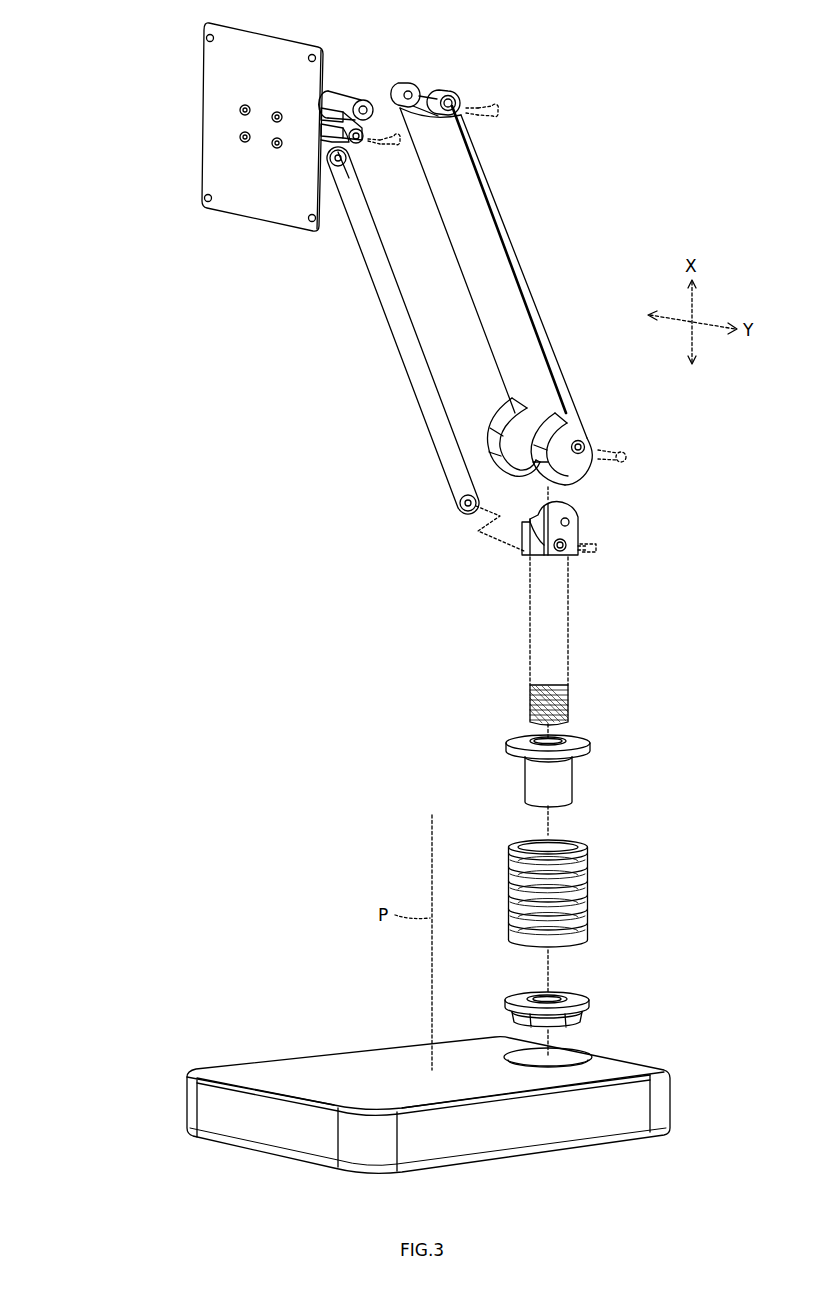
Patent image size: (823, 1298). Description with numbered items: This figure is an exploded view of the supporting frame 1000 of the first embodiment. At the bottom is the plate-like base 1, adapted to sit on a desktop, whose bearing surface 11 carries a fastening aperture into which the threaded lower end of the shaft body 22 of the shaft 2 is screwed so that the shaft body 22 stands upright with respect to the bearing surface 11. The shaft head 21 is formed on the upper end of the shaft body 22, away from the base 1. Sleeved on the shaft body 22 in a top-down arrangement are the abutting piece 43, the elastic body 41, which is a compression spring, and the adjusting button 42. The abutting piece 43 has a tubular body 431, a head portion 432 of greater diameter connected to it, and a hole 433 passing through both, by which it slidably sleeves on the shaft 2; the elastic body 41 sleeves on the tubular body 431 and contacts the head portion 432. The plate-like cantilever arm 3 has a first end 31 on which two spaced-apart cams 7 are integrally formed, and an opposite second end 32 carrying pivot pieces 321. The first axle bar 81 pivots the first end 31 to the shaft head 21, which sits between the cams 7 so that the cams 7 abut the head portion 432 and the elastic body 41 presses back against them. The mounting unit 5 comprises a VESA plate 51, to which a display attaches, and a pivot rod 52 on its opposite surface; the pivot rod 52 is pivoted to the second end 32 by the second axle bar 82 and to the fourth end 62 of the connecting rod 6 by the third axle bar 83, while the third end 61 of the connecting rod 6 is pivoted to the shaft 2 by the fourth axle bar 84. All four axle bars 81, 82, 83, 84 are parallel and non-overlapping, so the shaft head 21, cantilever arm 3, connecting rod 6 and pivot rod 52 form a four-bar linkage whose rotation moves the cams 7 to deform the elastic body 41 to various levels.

The supporting frame 1000 is at (88, 18).
The base 1 is at (318, 1072).
The bearing surface 11 is at (592, 1056).
The shaft 2 is at (655, 555).
The shaft head 21 is at (582, 548).
The shaft body 22 is at (560, 616).
The cantilever arm 3 is at (500, 195).
The first end 31 is at (589, 431).
The second end 32 is at (430, 94).
The pulley 321 is at (414, 84).
The elastic body 41 is at (590, 882).
The adjusting button 42 is at (584, 1010).
The abutting piece 43 is at (672, 715).
The tubular body 431 is at (568, 769).
The head portion 432 is at (592, 744).
The hole 433 is at (562, 742).
The mounting unit 5 is at (260, 31).
The plate 51 is at (201, 93).
The pivot rod 52 is at (345, 93).
The connecting rod 6 is at (422, 393).
The third end 61 is at (462, 512).
The fourth end 62 is at (337, 170).
The cams 7 is at (492, 429).
The first axle bar 81 is at (622, 446).
The second axle bar 82 is at (487, 119).
The third axle bar 83 is at (390, 146).
The fourth axle bar 84 is at (590, 552).